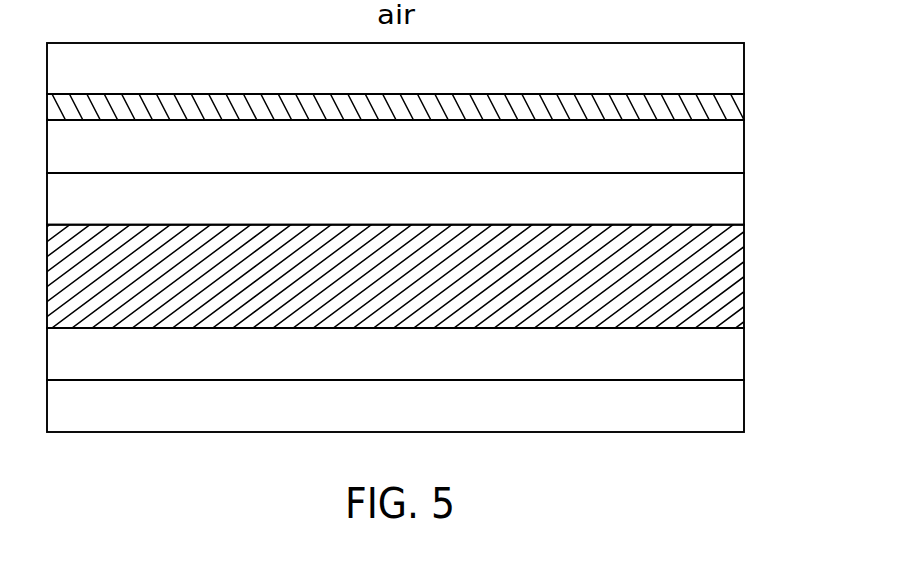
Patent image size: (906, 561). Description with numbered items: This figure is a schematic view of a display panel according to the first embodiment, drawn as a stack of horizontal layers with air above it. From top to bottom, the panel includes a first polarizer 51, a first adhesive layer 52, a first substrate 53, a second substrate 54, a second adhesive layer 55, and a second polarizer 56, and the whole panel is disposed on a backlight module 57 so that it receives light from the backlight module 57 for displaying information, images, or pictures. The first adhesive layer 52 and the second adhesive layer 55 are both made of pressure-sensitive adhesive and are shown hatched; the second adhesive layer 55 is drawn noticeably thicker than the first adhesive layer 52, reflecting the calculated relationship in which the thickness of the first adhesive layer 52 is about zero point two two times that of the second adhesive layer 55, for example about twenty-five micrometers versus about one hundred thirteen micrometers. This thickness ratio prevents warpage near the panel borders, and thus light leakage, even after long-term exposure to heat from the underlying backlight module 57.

The first polarizer 51 is at (745, 67).
The first adhesive layer 52 is at (745, 104).
The first substrate 53 is at (745, 146).
The second substrate 54 is at (745, 200).
The second adhesive layer 55 is at (745, 276).
The second polarizer 56 is at (745, 355).
The backlight module 57 is at (745, 405).